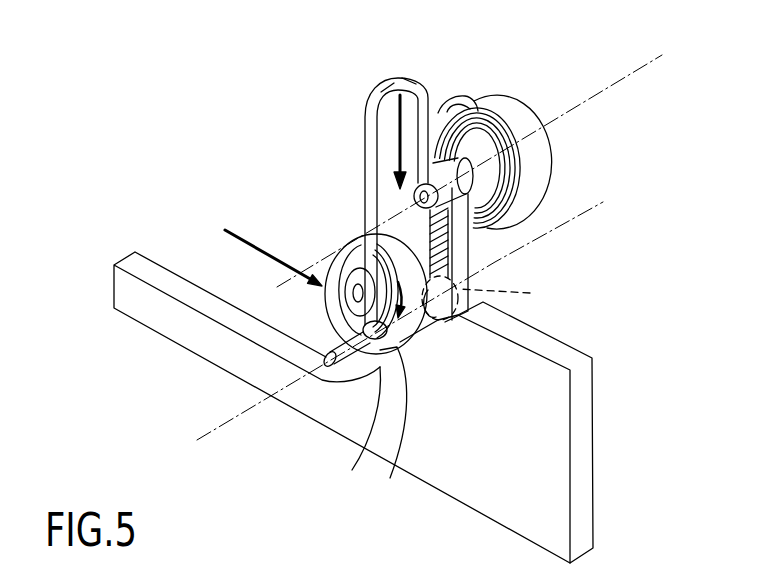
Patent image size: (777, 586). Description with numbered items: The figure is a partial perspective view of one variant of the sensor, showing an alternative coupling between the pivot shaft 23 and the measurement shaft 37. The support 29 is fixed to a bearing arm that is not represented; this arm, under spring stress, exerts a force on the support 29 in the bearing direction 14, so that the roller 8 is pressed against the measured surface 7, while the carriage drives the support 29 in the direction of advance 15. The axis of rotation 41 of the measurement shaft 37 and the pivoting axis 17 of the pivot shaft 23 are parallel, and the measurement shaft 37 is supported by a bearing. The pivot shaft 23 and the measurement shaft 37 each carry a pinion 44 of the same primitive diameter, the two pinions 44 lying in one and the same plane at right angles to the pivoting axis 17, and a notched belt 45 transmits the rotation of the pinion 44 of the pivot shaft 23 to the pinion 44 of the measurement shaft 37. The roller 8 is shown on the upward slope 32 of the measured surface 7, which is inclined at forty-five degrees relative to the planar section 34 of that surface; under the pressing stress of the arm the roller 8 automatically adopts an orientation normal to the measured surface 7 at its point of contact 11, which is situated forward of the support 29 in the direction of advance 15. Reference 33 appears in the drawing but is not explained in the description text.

The measured surface 7 is at (525, 332).
The roller 8 is at (330, 240).
The point of contact 11 is at (395, 429).
The bearing direction 14 is at (417, 98).
The direction of advance 15 is at (250, 240).
The pivoting axis 17 is at (582, 200).
The pivot shaft 23 is at (340, 348).
The support 29 is at (373, 114).
The upward slope 32 is at (356, 433).
The upper pulley 33 is at (513, 133).
The planar section 34 is at (182, 288).
The measurement shaft 37 is at (414, 200).
The axis of rotation 41 is at (623, 73).
The pinion 44 is at (471, 175).
The notched belt 45 is at (460, 252).